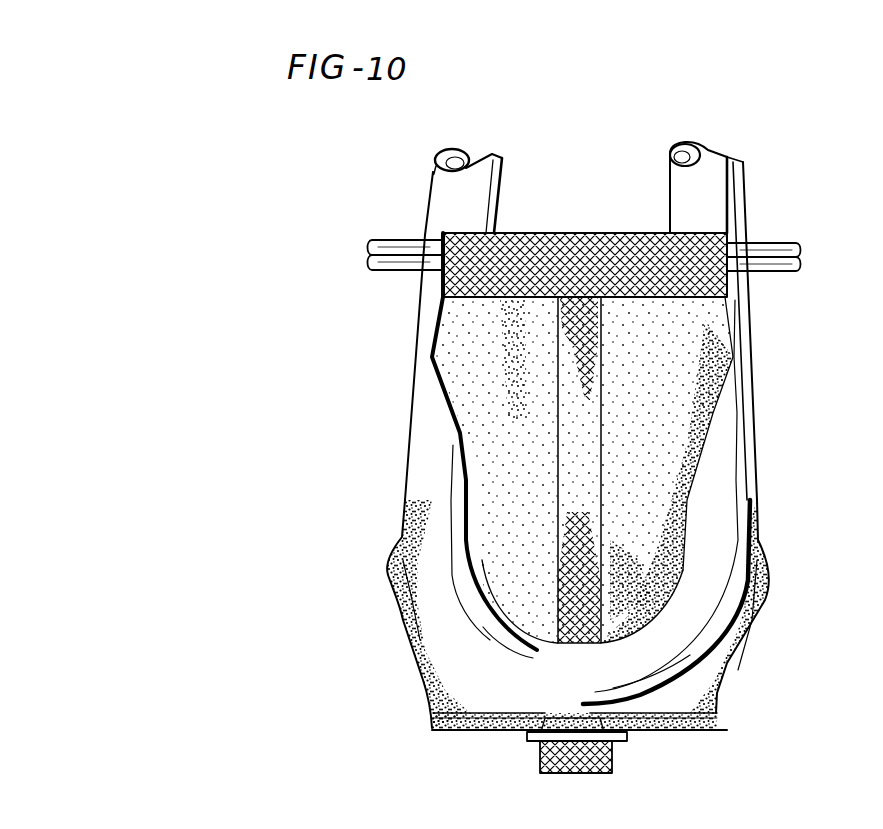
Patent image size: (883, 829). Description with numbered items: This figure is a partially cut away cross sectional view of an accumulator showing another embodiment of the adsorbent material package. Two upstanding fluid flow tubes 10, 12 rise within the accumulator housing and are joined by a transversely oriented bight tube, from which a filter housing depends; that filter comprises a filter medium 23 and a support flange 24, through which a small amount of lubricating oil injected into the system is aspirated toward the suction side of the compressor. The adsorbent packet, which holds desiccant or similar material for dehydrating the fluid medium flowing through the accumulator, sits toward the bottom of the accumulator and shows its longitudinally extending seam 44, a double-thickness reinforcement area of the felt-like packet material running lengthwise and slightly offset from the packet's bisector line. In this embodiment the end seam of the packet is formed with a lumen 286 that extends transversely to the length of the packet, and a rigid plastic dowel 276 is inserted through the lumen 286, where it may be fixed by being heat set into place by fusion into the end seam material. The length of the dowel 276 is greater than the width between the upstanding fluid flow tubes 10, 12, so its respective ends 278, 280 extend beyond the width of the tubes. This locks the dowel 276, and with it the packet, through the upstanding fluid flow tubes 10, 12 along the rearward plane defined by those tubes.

The fluid flow tube 10 is at (438, 176).
The fluid flow tube 12 is at (718, 177).
The lumen 286 is at (432, 237).
The dowel end 278 is at (368, 272).
The rigid plastic dowel 276 is at (789, 251).
The dowel end 280 is at (777, 272).
The longitudinally extending seam 44 is at (590, 475).
The support flange 24 is at (527, 736).
The filter medium 23 is at (613, 763).